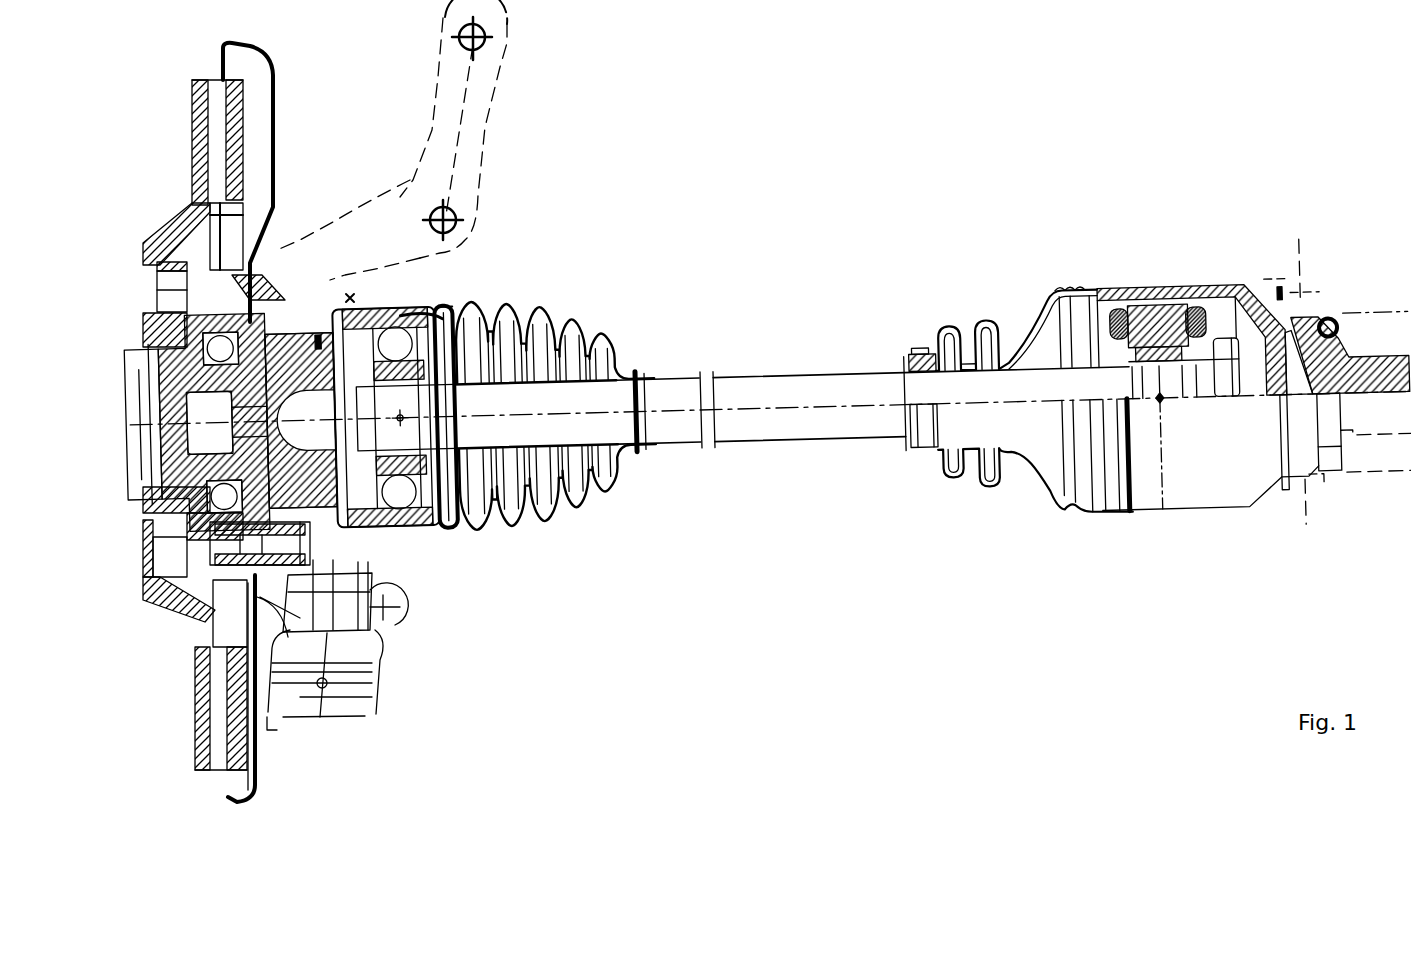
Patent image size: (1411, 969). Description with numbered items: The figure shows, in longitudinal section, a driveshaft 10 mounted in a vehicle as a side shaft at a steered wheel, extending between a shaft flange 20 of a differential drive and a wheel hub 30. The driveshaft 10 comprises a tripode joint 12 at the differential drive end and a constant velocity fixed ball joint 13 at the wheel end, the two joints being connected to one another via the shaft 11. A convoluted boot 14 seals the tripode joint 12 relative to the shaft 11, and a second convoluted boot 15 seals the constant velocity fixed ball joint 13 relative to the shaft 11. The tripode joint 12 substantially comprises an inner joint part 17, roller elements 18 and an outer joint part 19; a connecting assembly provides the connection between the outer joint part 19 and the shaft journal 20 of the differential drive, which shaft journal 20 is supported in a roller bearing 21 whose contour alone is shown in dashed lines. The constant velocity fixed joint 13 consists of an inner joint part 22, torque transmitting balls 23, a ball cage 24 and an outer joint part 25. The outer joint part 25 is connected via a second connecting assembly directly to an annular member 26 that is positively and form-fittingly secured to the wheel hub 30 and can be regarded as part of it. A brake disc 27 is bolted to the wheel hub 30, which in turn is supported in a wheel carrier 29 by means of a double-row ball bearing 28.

The driveshaft 10 is at (833, 247).
The shaft 11 is at (766, 386).
The tripode joint 12 is at (1131, 266).
The constant velocity fixed ball joint 13 is at (460, 293).
The convoluted boot 14 is at (1037, 342).
The convoluted boot 15 is at (581, 319).
The inner joint part 17 is at (1184, 310).
The roller elements 18 is at (1209, 310).
The outer joint part 19 is at (1232, 311).
The shaft journal 20 is at (1312, 313).
The roller bearing 21 is at (1340, 321).
The inner joint part 22 is at (428, 306).
The torque transmitting balls 23 is at (408, 299).
The ball cage 24 is at (378, 298).
The outer joint part 25 is at (362, 297).
The annular member 26 is at (300, 291).
The brake disc 27 is at (190, 207).
The double-row ball bearing 28 is at (250, 290).
The wheel carrier 29 is at (295, 290).
The wheel hub 30 is at (140, 296).